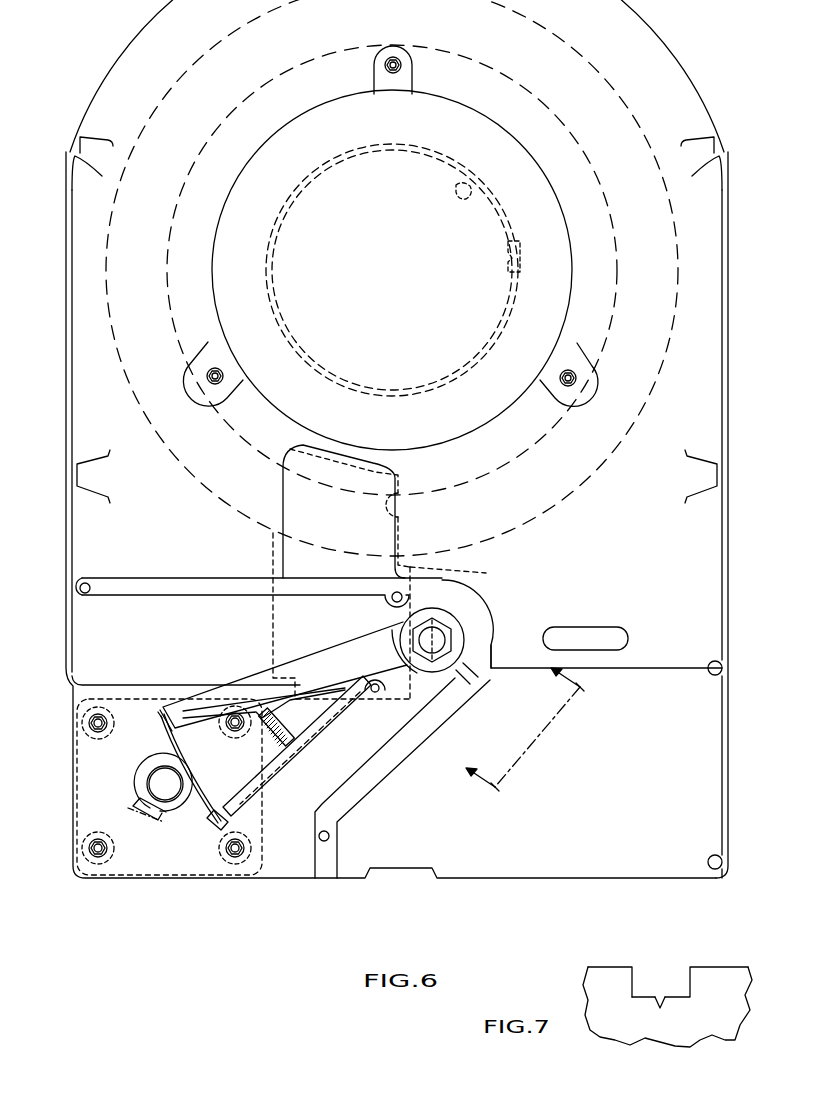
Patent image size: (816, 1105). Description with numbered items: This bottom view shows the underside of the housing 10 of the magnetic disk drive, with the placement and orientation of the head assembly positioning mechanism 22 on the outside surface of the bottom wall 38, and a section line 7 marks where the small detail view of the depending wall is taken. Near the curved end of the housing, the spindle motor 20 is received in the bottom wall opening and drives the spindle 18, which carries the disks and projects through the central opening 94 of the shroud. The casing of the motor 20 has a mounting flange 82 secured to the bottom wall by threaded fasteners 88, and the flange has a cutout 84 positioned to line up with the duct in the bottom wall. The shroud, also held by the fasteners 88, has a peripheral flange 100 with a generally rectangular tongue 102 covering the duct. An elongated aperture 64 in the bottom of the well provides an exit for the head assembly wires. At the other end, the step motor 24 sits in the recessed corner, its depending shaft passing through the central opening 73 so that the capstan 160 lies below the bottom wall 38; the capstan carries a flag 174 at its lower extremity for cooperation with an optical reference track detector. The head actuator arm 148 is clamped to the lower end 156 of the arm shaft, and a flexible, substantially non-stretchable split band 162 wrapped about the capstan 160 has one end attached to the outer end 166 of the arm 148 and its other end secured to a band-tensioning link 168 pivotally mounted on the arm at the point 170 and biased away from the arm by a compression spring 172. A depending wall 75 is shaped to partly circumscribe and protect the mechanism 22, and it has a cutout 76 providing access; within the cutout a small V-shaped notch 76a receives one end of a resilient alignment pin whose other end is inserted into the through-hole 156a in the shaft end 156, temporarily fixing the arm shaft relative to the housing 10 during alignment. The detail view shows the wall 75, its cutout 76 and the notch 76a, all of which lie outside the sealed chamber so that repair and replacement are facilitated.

In FIG. 6, the housing 10 is at (735, 258).
In FIG. 6, the spindle 18 is at (506, 250).
In FIG. 6, the motor 20 is at (577, 268).
In FIG. 6, the head assembly positioning mechanism 22 is at (217, 669).
In FIG. 6, the step motor 24 is at (73, 790).
In FIG. 6, the bottom wall 38 is at (654, 541).
In FIG. 6, the elongated aperture 64 is at (585, 633).
In FIG. 6, the central opening 73 is at (150, 770).
In FIG. 6, the depending wall 75 is at (366, 790).
In FIG. 7, the depending wall 75 is at (600, 967).
In FIG. 6, the cutout 76 is at (466, 684).
In FIG. 7, the cutout 76 is at (645, 985).
In FIG. 6, the V-shaped notch 76a is at (492, 648).
In FIG. 7, the V-shaped notch 76a is at (660, 1000).
In FIG. 6, the mounting flange 82 is at (603, 348).
In FIG. 6, the cutout 84 is at (399, 514).
In FIG. 6, the threaded fasteners 88 is at (397, 61).
In FIG. 6, the central opening 94 is at (470, 190).
In FIG. 6, the peripheral flange 100 is at (633, 433).
In FIG. 6, the tongue 102 is at (461, 574).
In FIG. 6, the head actuator arm 148 is at (333, 645).
In FIG. 6, the lower end of the arm shaft 156 is at (440, 632).
In FIG. 6, the through-hole 156a is at (475, 590).
In FIG. 6, the capstan 160 is at (165, 818).
In FIG. 6, the split band 162 is at (205, 796).
In FIG. 6, the outer end of the actuator arm 166 is at (168, 705).
In FIG. 6, the band-tensioning link 168 is at (317, 758).
In FIG. 6, the pivot point 170 is at (378, 696).
In FIG. 6, the compression spring 172 is at (284, 709).
In FIG. 6, the flag 174 is at (138, 810).
In FIG. 6, the section line 7- 7 is at (523, 722).